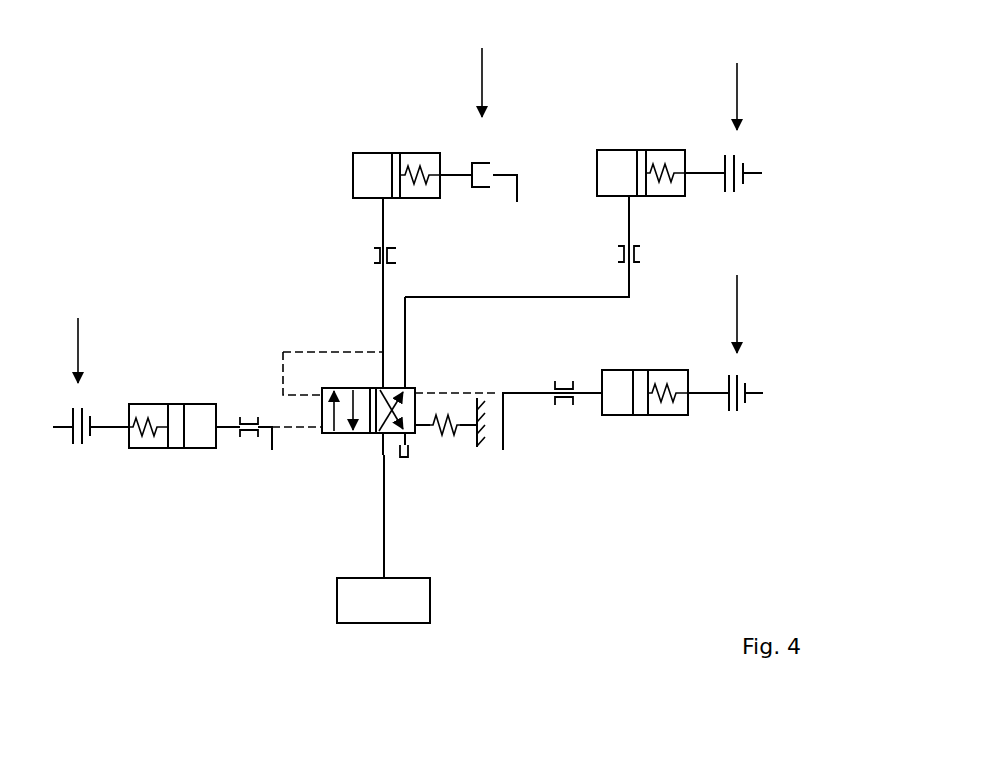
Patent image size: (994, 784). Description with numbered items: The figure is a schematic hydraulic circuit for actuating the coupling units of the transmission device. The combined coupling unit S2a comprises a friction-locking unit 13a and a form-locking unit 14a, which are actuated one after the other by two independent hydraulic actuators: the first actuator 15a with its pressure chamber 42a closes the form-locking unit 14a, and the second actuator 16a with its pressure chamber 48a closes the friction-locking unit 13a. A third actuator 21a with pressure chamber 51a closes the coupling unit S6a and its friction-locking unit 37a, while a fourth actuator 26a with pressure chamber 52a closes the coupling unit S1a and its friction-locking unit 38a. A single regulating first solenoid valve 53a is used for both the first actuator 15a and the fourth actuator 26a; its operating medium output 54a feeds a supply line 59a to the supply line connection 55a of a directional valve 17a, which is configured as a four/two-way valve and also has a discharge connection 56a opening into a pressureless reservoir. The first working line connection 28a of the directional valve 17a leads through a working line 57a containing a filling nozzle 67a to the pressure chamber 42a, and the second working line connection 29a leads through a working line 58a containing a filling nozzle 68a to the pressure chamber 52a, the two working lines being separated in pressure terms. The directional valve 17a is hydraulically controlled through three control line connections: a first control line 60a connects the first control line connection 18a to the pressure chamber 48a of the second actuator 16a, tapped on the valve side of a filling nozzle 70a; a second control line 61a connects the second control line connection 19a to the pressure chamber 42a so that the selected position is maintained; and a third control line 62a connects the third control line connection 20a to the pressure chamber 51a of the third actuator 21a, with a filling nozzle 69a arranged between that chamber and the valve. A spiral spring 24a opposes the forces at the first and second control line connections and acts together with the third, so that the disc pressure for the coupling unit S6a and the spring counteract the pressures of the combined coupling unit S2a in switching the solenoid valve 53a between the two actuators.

The friction-locking unit 13a is at (58, 456).
The form-locking unit 14a is at (504, 158).
The first hydraulic actuator 15a is at (355, 129).
The second hydraulic actuator 16a is at (186, 475).
The directional valve 17a is at (310, 409).
The first control line connection 18a is at (379, 434).
The second control line connection 19a is at (314, 388).
The third control line connection 20a is at (428, 392).
The third hydraulic actuator 21a is at (616, 434).
The spring 24a is at (448, 438).
The fourth hydraulic actuator 26a is at (652, 128).
The first hydraulic working line connection 28a is at (382, 386).
The second hydraulic working line connection 29a is at (413, 386).
The friction-locking unit 37a is at (750, 377).
The friction-locking unit 38a is at (749, 157).
The pressure chamber 42a is at (372, 165).
The pressure chamber 48a is at (198, 430).
The pressure chamber 51a is at (619, 390).
The pressure chamber 52a is at (613, 165).
The first solenoid valve 53a is at (385, 601).
The hydraulic operating medium output 54a is at (386, 577).
The hydraulic supply line connection 55a is at (376, 437).
The hydraulic discharge connection 56a is at (417, 437).
The hydraulic working line 57a is at (383, 210).
The hydraulic working line 58a is at (631, 220).
The hydraulic supply line 59a is at (384, 545).
The first control line 60a is at (286, 430).
The second control line 61a is at (283, 351).
The third control line 62a is at (487, 392).
The filling nozzle 67a is at (398, 254).
The filling nozzle 68a is at (641, 255).
The filling nozzle 69a is at (565, 380).
The filling nozzle 70a is at (250, 440).
The coupling unit S1a is at (735, 84).
The combined coupling unit S2a is at (276, 204).
The coupling unit S6a is at (733, 299).